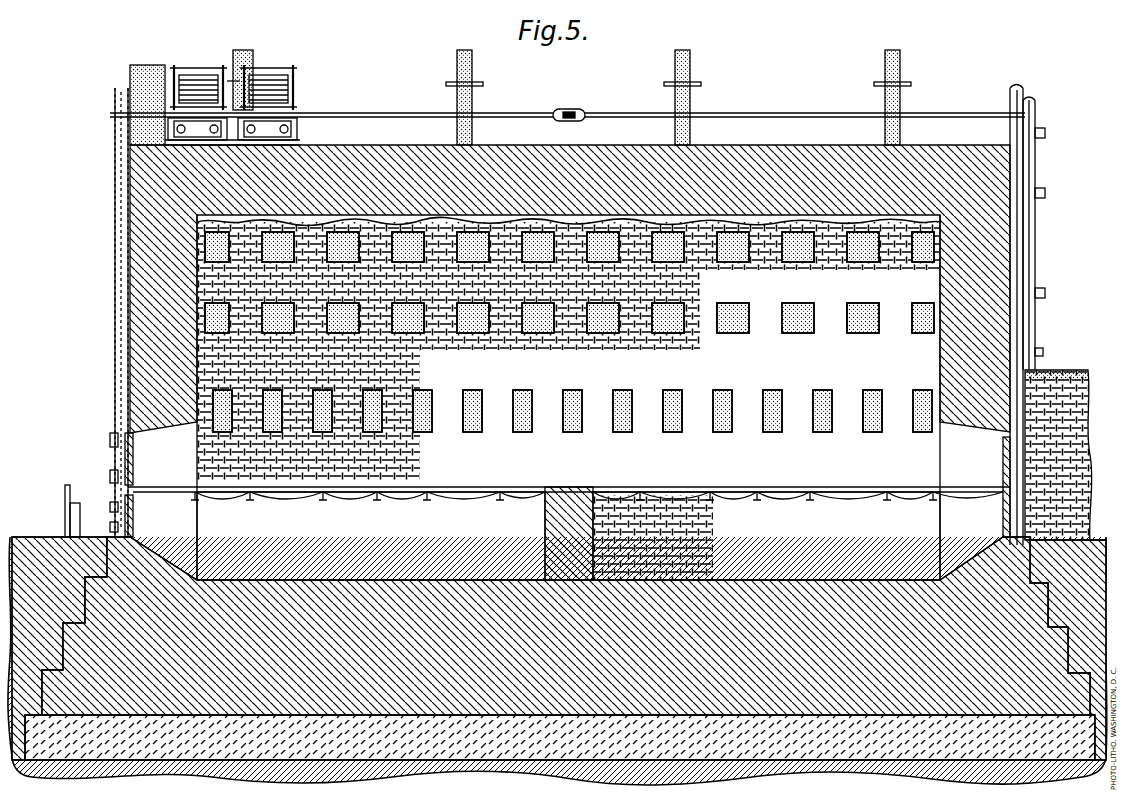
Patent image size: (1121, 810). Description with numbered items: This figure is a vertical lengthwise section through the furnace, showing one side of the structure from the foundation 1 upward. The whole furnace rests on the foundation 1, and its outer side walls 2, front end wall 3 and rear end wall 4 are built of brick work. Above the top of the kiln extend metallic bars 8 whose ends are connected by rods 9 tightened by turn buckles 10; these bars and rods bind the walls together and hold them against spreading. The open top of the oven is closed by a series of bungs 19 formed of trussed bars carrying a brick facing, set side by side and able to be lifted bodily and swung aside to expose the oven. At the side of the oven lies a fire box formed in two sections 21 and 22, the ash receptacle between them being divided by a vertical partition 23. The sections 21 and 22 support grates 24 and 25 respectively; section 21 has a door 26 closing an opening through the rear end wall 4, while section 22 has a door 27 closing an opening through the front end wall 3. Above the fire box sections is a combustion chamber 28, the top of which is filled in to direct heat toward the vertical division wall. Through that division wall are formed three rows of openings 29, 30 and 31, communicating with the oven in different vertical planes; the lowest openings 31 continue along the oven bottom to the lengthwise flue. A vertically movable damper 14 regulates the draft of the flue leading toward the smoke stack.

The foundation 1 is at (593, 778).
The outer side walls 2 is at (222, 349).
The front end wall 3 is at (1010, 248).
The rear end wall 4 is at (115, 270).
The metallic bars 8 is at (115, 94).
The rods 9 is at (753, 116).
The turn buckles 10 is at (572, 108).
The damper 14 is at (65, 493).
The bungs 19 is at (195, 67).
The fire box section 21 is at (371, 536).
The fire box section 22 is at (766, 536).
The vertical partition 23 is at (545, 527).
The grate 24 is at (450, 495).
The grate 25 is at (866, 500).
The door 26 is at (110, 457).
The door 27 is at (1023, 459).
The combustion chamber 28 is at (928, 290).
The openings 29 is at (541, 255).
The openings 30 is at (542, 328).
The openings 31 is at (507, 396).